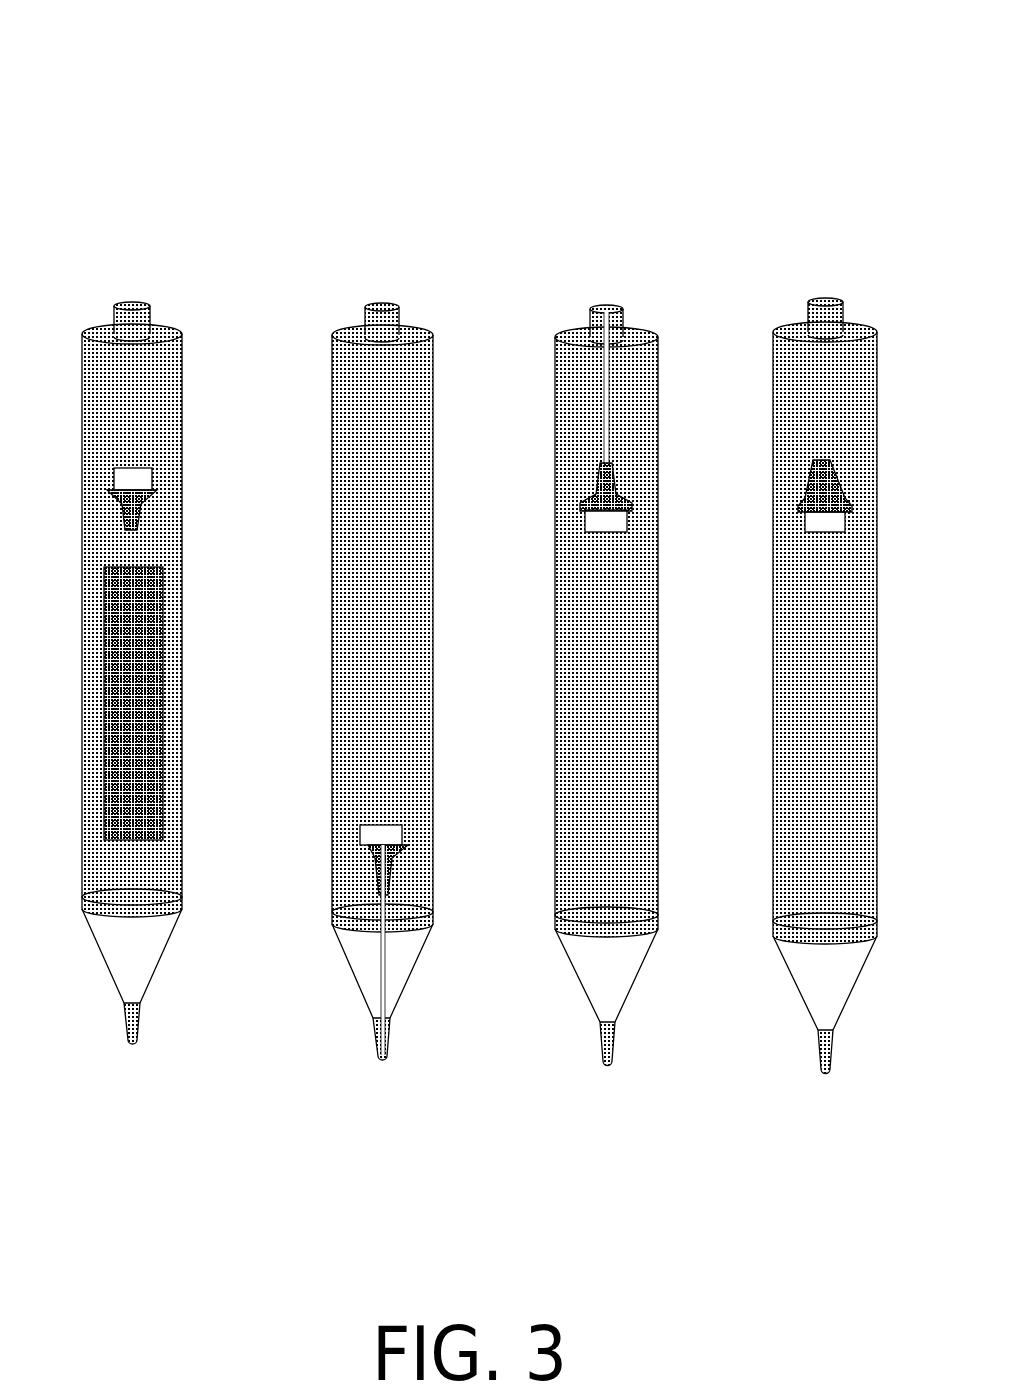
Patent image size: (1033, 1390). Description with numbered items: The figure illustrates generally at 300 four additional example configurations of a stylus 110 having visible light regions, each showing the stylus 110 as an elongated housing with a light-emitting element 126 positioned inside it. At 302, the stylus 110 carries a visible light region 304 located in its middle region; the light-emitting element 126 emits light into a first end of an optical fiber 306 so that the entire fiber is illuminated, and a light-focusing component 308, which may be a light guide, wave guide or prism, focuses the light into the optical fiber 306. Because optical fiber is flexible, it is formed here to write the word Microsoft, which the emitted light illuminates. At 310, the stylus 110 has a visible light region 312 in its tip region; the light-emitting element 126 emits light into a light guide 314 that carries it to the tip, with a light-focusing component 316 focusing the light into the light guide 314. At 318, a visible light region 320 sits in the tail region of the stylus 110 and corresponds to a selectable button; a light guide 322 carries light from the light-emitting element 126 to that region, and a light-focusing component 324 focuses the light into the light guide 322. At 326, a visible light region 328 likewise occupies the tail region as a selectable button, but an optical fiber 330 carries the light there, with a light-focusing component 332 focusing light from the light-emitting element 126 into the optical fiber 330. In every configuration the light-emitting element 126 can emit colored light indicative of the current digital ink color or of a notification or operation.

The additional example configurations of the stylus 300 is at (155, 82).
The first example configuration 302 is at (138, 272).
The second example configuration 310 is at (377, 272).
The third example configuration 318 is at (599, 272).
The fourth example configuration 326 is at (814, 272).
The stylus 110 is at (84, 388).
The light-emitting element 126 is at (114, 477).
The light-focusing component 308 is at (130, 509).
The optical fiber 306 is at (132, 541).
The visible light region 304 is at (118, 668).
The visible light region 312 is at (371, 1033).
The light guide 314 is at (381, 898).
The light-focusing component 316 is at (378, 866).
The visible light region 320 is at (598, 325).
The light guide 322 is at (605, 445).
The light-focusing component 324 is at (596, 490).
The visible light region 328 is at (817, 315).
The optical fiber 330 is at (822, 445).
The light-focusing component 332 is at (811, 490).